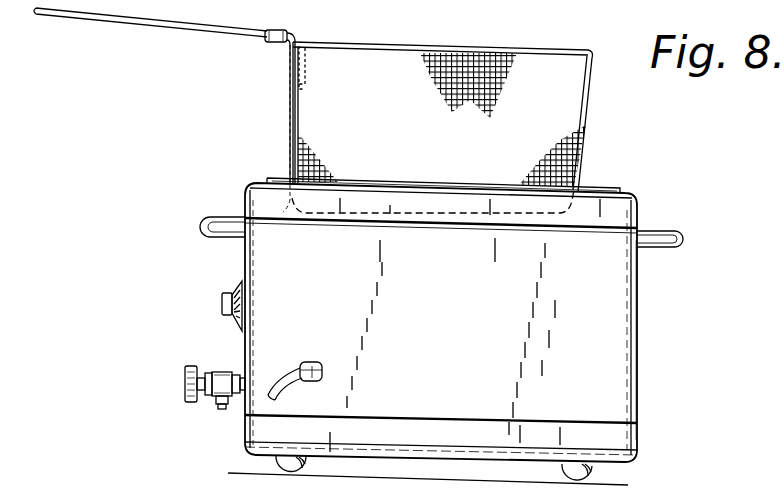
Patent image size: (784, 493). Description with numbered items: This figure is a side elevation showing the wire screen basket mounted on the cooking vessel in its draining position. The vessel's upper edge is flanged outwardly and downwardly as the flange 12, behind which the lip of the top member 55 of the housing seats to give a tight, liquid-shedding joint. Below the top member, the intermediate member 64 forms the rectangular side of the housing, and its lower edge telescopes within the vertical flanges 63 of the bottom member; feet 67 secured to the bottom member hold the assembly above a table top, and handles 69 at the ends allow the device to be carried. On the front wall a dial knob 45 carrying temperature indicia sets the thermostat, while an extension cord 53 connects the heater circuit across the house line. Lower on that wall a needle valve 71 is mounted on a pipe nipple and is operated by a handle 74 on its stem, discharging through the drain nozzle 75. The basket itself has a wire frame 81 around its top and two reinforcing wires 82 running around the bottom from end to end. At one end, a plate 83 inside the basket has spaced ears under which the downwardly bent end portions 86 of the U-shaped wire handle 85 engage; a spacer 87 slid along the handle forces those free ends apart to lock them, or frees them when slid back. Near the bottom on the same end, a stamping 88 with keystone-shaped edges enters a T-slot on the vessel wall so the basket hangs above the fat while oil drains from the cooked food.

The flange 12 is at (606, 189).
The dial knob 45 is at (221, 305).
The extension cord 53 is at (298, 372).
The top member 55 is at (622, 214).
The vertical flanges 63 is at (618, 436).
The intermediate member 64 is at (612, 366).
The feet 67 is at (276, 467).
The handles 69 is at (206, 219).
The needle valve 71 is at (220, 370).
The handle 74 is at (185, 378).
The drain nozzle 75 is at (217, 407).
The wire frame 81 is at (528, 44).
The reinforcing wires 82 is at (590, 104).
The plate 83 is at (307, 72).
The wire handle 85 is at (40, 17).
The end portions 86 is at (289, 62).
The spacer 87 is at (268, 40).
The stamping 88 is at (576, 137).